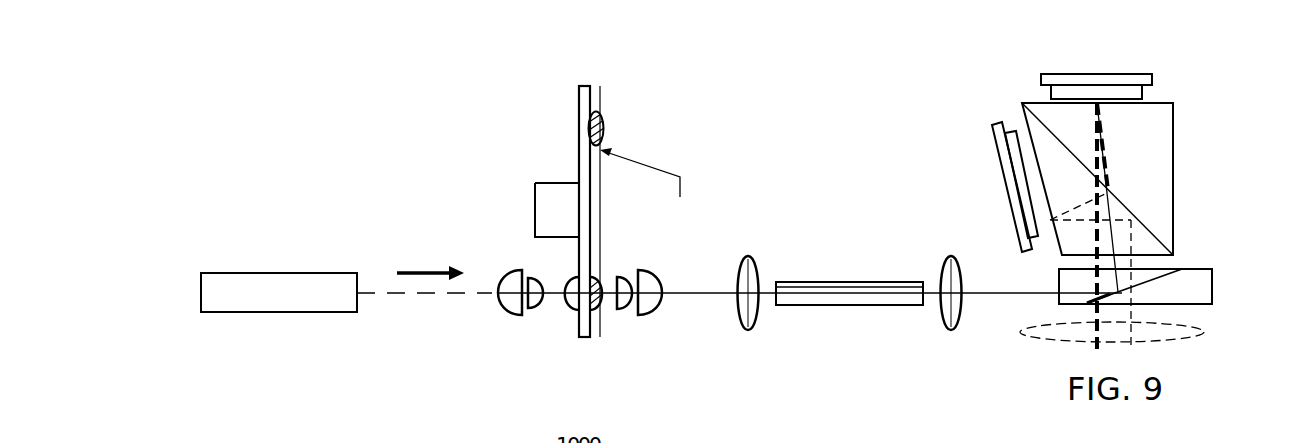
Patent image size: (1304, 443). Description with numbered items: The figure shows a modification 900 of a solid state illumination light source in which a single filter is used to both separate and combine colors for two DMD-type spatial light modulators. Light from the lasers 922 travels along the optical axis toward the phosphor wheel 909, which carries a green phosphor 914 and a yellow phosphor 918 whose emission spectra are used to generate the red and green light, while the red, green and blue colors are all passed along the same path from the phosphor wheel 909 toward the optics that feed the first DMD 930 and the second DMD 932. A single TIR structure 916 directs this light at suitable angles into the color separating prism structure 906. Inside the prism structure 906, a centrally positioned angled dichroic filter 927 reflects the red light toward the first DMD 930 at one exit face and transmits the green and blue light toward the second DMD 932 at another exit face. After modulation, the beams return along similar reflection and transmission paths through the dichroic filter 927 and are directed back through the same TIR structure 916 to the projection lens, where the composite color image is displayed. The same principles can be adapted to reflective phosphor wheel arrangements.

The modification 900 is at (706, 106).
The 448nm lasers 922 is at (201, 281).
The phosphor wheel 909 is at (579, 126).
The yellow phosphor 918 is at (602, 118).
The green phosphor 914 is at (590, 312).
The first DMD 930 is at (1003, 187).
The second DMD 932 is at (1152, 79).
The color separating prism structure 906 is at (1173, 178).
The angled dichroic filter 927 is at (1127, 207).
The TIR structure 916 is at (1212, 287).